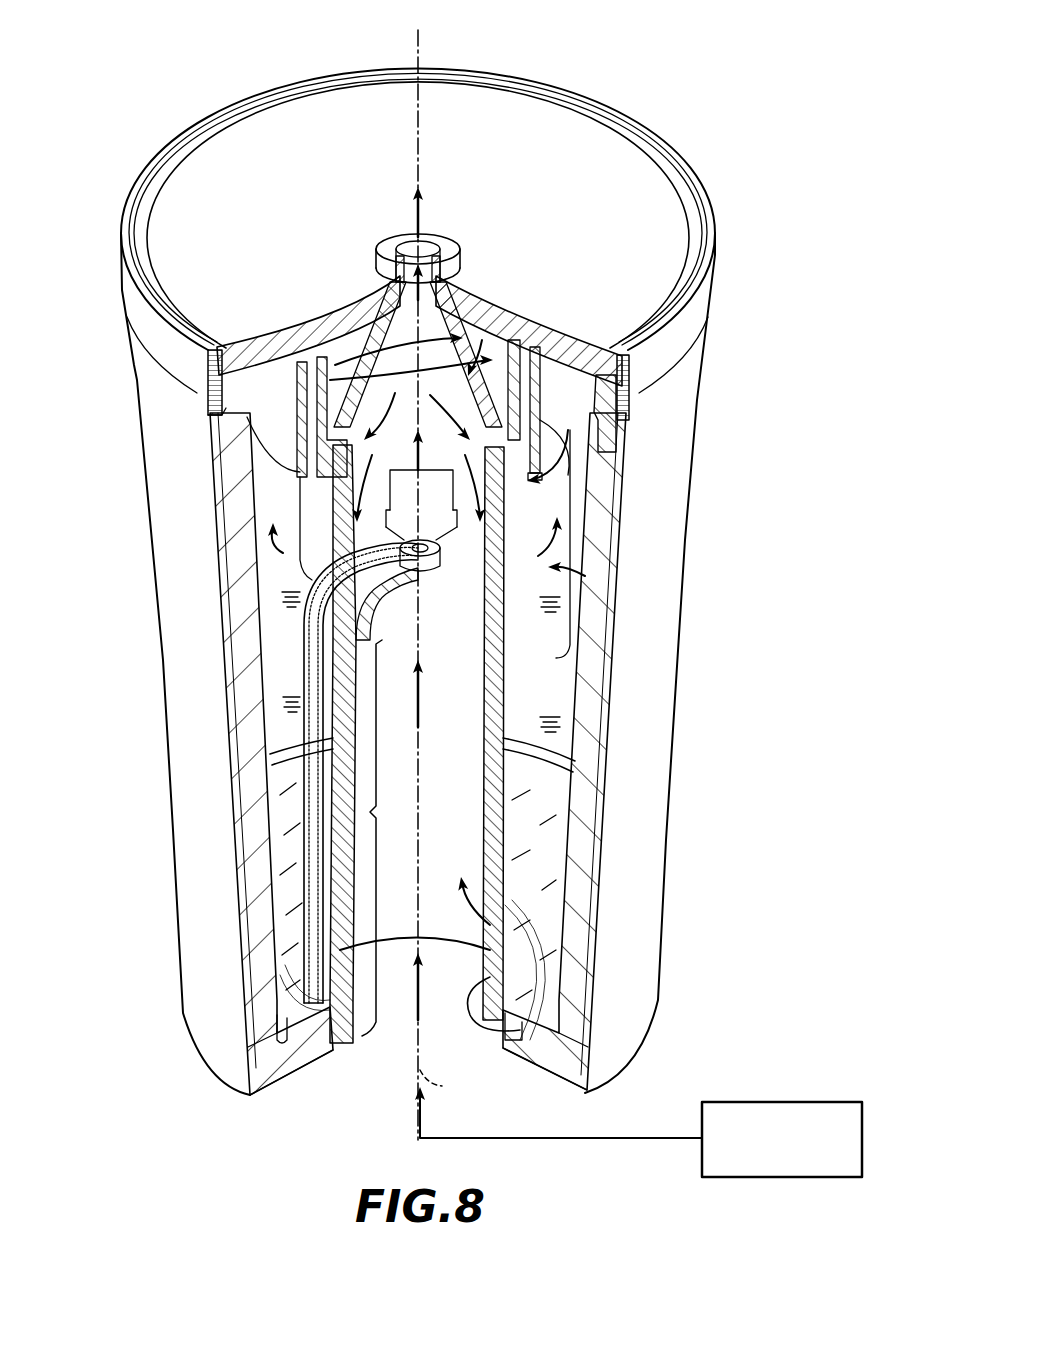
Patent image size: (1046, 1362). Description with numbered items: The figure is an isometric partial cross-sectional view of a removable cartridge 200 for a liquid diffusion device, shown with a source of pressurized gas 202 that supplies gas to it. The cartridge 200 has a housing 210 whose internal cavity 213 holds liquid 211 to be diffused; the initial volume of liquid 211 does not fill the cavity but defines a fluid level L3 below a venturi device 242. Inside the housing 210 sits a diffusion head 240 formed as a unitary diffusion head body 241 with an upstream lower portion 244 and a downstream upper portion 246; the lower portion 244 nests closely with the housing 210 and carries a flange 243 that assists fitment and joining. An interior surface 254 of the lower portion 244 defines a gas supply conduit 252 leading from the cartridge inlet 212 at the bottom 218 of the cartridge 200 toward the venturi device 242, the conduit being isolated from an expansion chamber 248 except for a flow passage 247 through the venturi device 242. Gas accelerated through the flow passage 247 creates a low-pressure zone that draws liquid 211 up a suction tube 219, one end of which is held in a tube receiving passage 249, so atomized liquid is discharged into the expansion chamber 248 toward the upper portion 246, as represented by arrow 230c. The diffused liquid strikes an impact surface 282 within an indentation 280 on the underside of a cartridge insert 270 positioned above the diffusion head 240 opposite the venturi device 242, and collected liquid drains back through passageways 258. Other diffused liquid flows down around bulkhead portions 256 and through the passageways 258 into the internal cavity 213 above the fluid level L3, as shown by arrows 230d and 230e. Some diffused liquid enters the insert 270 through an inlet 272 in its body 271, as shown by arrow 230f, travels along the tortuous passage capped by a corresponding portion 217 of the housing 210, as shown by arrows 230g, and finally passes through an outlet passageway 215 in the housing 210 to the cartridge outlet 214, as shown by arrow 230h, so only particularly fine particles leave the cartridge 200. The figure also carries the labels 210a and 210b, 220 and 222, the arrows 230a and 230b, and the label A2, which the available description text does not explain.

The cartridge 200 is at (668, 90).
The source of pressurized gas 202 is at (803, 1102).
The housing 210 is at (720, 152).
The upper portion of container 210a is at (676, 255).
The body of container 210b is at (640, 607).
The liquid 211 is at (553, 847).
The cartridge inlet 212 is at (352, 1093).
The internal cavity 213 is at (272, 481).
The cartridge outlet 214 is at (433, 243).
The outlet passageway 215 is at (432, 285).
The portion of the housing 217 is at (498, 333).
The bottom of the cartridge 218 is at (550, 1088).
The suction tube 219 is at (308, 862).
The seal 220 is at (592, 425).
The retaining ring 222 is at (588, 398).
The gas flow path 230a is at (420, 990).
The gas flow path 230b is at (418, 693).
The arrow 230c is at (422, 478).
The arrow 230d is at (357, 415).
The arrow 230e is at (283, 553).
The arrow 230f is at (538, 505).
The arrows 230g is at (448, 336).
The arrow 230h is at (410, 215).
The diffusion head 240 is at (518, 657).
The diffusion head body 241 is at (268, 762).
The venturi device 242 is at (515, 620).
The flange 243 is at (300, 1018).
The lower portion 244 is at (396, 838).
The upper portion 246 is at (458, 557).
The flow passage 247 is at (430, 608).
The expansion chamber 248 is at (310, 593).
The tube receiving passage 249 is at (310, 612).
The gas supply conduit 252 is at (507, 934).
The interior surface 254 is at (513, 1030).
The bulkhead portions 256 is at (307, 513).
The passageways 258 is at (284, 592).
The cartridge insert 270 is at (562, 410).
The body 271 is at (490, 360).
The inlet 272 is at (515, 496).
The indentation 280 is at (330, 492).
The impact surface 282 is at (345, 365).
The fluid level L3 is at (555, 748).
The inlet area A2 is at (442, 1086).